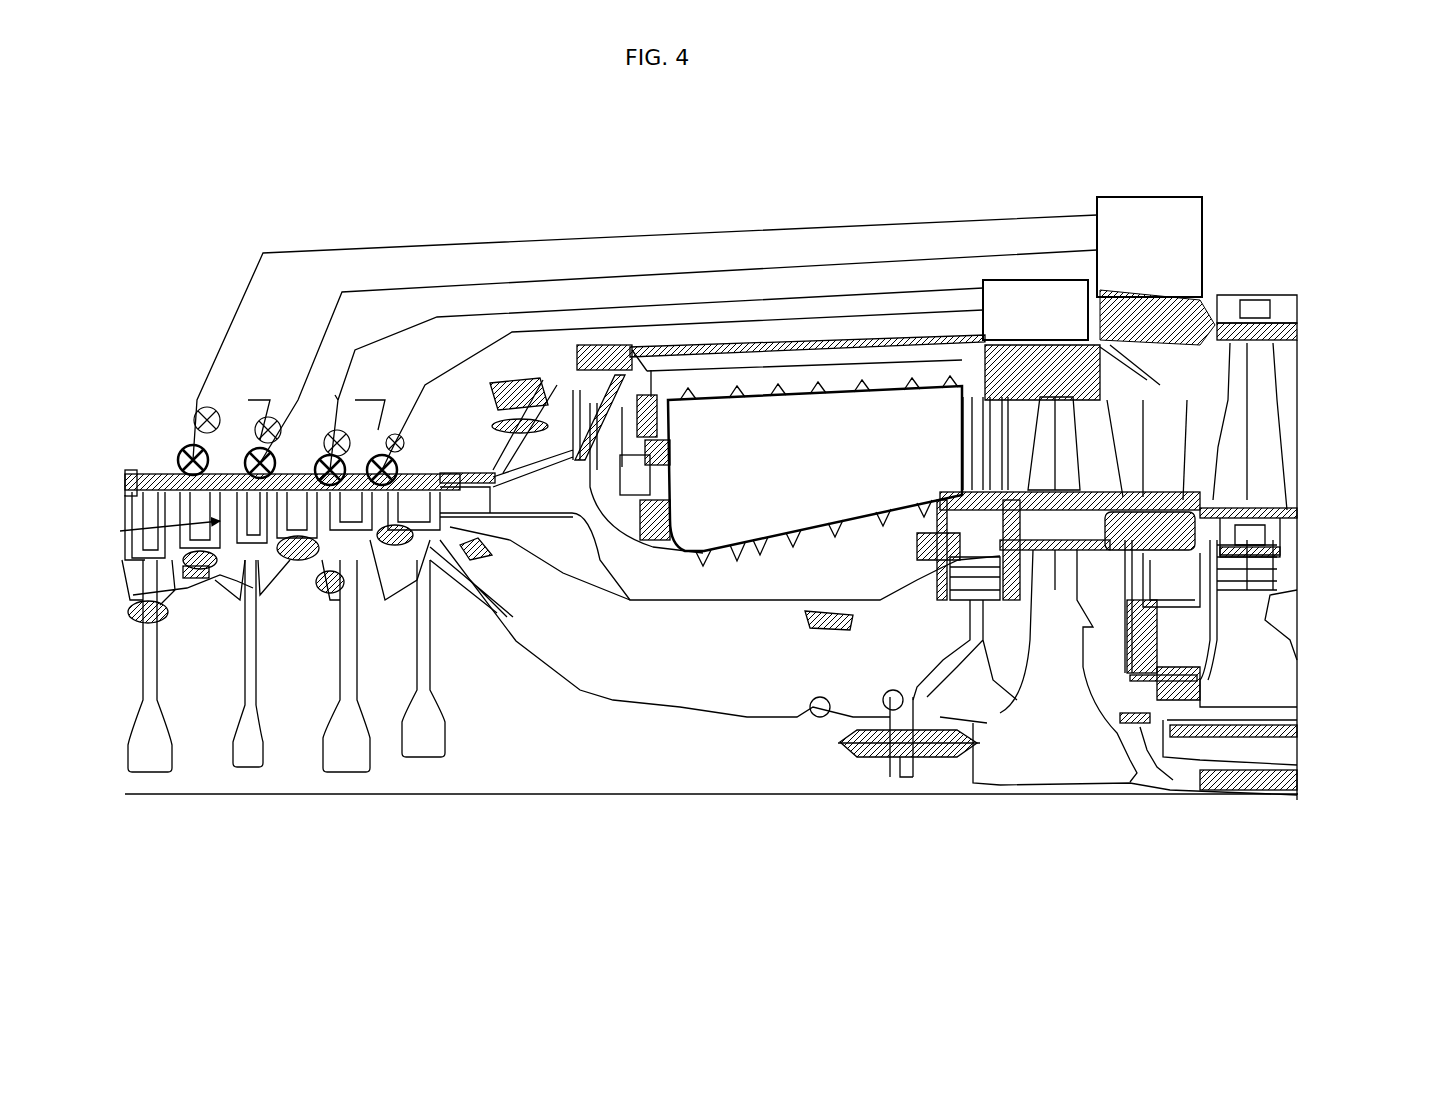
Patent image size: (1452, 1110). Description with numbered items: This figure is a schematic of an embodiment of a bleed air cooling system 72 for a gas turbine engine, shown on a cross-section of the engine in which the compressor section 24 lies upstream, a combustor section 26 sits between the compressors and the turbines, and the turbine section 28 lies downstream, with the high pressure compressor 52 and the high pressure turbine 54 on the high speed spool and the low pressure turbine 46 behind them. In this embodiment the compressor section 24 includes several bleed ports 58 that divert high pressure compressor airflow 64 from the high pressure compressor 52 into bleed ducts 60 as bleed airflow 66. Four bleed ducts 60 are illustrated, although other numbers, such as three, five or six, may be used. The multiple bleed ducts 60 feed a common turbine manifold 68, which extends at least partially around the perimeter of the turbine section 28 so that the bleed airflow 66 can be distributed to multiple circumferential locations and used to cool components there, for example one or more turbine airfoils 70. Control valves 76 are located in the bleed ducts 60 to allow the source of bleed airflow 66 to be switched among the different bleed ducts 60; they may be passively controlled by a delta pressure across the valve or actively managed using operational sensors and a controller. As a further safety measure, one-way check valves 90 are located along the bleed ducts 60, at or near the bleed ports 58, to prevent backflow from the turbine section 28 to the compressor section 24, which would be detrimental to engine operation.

The compressor section 24 is at (313, 668).
The combustor section 26 is at (803, 487).
The turbine section 28 is at (1288, 285).
The low pressure turbine 46 is at (1280, 412).
The high pressure compressor 52 is at (362, 765).
The high pressure turbine 54 is at (1063, 730).
The bleed port 58 is at (167, 470).
The bleed duct 60 is at (660, 322).
The high pressure compressor airflow 64 is at (153, 513).
The bleed airflow 66 is at (335, 395).
The turbine manifold 68 is at (1158, 260).
The turbine airfoil 70 is at (1235, 465).
The bleed air cooling system 72 is at (530, 200).
The control valve 76 is at (260, 400).
The one-way check valve 90 is at (255, 462).